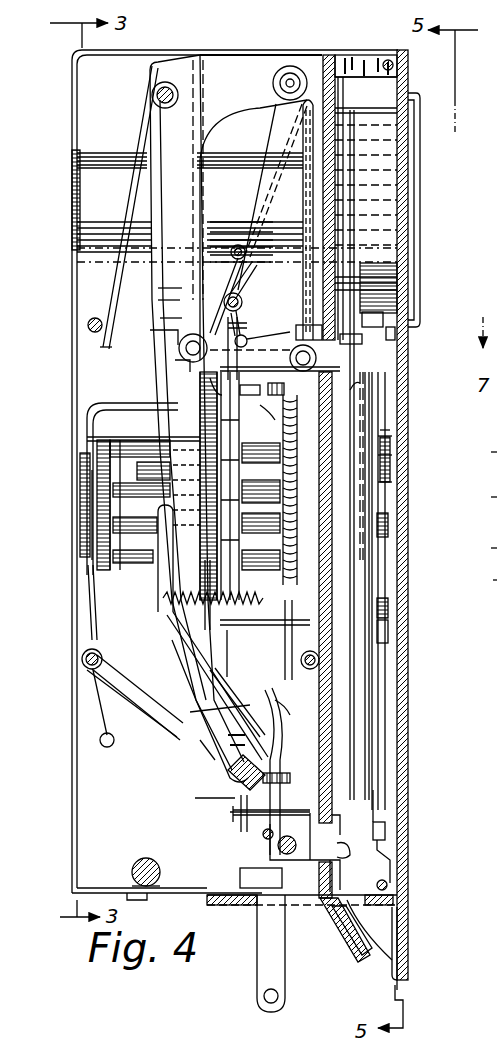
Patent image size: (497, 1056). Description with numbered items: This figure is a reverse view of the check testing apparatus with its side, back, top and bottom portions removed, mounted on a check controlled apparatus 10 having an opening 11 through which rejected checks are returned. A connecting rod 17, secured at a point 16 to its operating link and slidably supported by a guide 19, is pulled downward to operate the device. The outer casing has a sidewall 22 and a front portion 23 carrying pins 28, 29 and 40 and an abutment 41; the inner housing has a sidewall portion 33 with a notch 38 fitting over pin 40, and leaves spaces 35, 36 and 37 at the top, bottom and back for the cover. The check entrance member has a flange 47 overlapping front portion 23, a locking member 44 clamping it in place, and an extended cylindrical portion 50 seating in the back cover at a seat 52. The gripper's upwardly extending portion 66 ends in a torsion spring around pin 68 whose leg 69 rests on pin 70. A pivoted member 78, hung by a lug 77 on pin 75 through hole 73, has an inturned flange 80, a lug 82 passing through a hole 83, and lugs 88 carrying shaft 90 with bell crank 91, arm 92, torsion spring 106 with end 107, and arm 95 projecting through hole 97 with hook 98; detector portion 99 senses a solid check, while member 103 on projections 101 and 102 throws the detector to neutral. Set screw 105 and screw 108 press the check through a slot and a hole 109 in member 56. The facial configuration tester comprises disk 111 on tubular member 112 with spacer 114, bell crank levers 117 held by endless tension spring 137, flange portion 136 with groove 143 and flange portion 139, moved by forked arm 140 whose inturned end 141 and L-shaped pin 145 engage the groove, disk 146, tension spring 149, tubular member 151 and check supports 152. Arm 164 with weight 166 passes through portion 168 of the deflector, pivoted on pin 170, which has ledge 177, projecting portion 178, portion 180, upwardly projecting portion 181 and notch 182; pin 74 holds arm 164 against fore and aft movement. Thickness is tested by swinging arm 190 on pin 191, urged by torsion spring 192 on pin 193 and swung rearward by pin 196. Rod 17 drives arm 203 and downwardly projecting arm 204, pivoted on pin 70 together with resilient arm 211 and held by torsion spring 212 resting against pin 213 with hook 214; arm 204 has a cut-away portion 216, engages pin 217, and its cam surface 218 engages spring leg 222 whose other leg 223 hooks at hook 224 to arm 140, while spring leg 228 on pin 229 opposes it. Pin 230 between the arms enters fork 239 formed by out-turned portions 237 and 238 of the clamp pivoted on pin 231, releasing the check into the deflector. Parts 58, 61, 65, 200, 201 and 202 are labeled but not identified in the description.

The base plate 10 is at (248, 907).
The bottom plate 11 is at (400, 975).
The pin 16 is at (280, 996).
The lever bar 17 is at (277, 117).
The block 19 is at (244, 878).
The section 22 is at (485, 451).
The side wall 23 is at (408, 162).
The screw 28 is at (387, 60).
The rod 29 is at (376, 905).
The bracket 33 is at (197, 802).
The top wall 35 is at (232, 56).
The notch 36 is at (137, 900).
The casing 37 is at (75, 430).
The bracket 38 is at (162, 878).
The roller 40 is at (158, 866).
The block 41 is at (350, 64).
The inner wall 44 is at (337, 63).
The flange 47 is at (420, 130).
The drum 50 is at (248, 156).
The guide 52 is at (72, 178).
The block 56 is at (350, 268).
The section 58 is at (486, 581).
The block 61 is at (372, 319).
The bracket 65 is at (221, 389).
The link rod 66 is at (252, 203).
The pivot ring 68 is at (300, 68).
The guide rods 69 is at (212, 78).
The pivot 70 is at (172, 84).
The bracket 73 is at (320, 861).
The pin 74 is at (263, 840).
The hub 75 is at (345, 849).
The rod 77 is at (270, 828).
The rod 78 is at (384, 707).
The plate 80 is at (372, 428).
The block 82 is at (350, 341).
The block 83 is at (309, 325).
The stop 88 is at (395, 333).
The section 90 is at (485, 549).
The nut 91 is at (388, 525).
The section 92 is at (485, 498).
The nut 95 is at (388, 606).
The guide rail 97 is at (346, 190).
The rod 98 is at (216, 618).
The rod 99 is at (386, 551).
The sleeve 101 is at (388, 632).
The bracket 102 is at (386, 832).
The inner wall 103 is at (388, 582).
The thread 105 is at (392, 488).
The threaded rod 106 is at (390, 472).
The collar 107 is at (392, 455).
The collar 108 is at (392, 436).
The pin 109 is at (423, 423).
The block 111 is at (281, 391).
The rail 112 is at (219, 486).
The arm 114 is at (362, 386).
The plate 117 is at (160, 445).
The plate 136 is at (120, 586).
The block 137 is at (253, 394).
The gear 139 is at (110, 497).
The rod 140 is at (88, 580).
The shaft 141 is at (80, 505).
The gear 143 is at (80, 470).
The housing 145 is at (120, 404).
The coil spring 146 is at (283, 440).
The spring 149 is at (220, 588).
The bracket 151 is at (149, 568).
The spring column 152 is at (126, 614).
The rod 164 is at (280, 752).
The clamp 166 is at (288, 769).
The rod 168 is at (260, 828).
The pivot 170 is at (318, 652).
The rod 177 is at (241, 797).
The bracket 178 is at (233, 812).
The rod 180 is at (273, 640).
The link 181 is at (296, 709).
The link 182 is at (208, 704).
The rod 190 is at (265, 515).
The pivot 191 is at (246, 299).
The lever 192 is at (248, 278).
The spring 193 is at (244, 230).
The pin 196 is at (285, 331).
The rod 200 is at (398, 963).
The plate 201 is at (345, 945).
The plate 202 is at (306, 908).
The pivot pin 203 is at (263, 68).
The bracket 204 is at (160, 288).
The lever 211 is at (172, 636).
The rod 212 is at (140, 130).
The pivot 213 is at (96, 318).
The bracket 214 is at (158, 300).
The rod 216 is at (194, 688).
The pivot 217 is at (100, 652).
The clamp 218 is at (226, 768).
The arm 222 is at (126, 678).
The link 223 is at (211, 702).
The link 224 is at (195, 755).
The rod 228 is at (102, 712).
The pin 229 is at (106, 748).
The bracket 230 is at (160, 318).
The pivot 231 is at (316, 362).
The bracket 237 is at (145, 337).
The bracket 238 is at (178, 362).
The pivot 239 is at (181, 358).